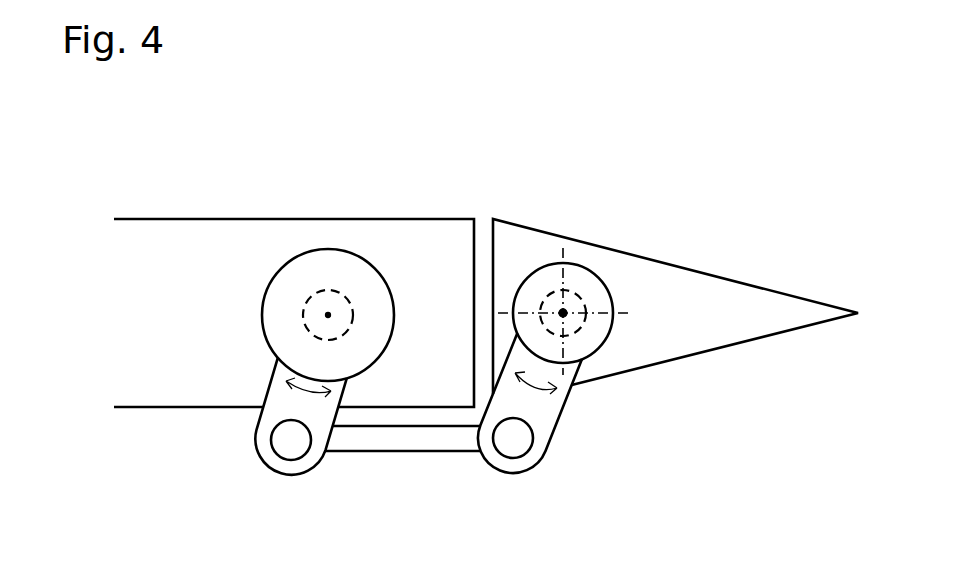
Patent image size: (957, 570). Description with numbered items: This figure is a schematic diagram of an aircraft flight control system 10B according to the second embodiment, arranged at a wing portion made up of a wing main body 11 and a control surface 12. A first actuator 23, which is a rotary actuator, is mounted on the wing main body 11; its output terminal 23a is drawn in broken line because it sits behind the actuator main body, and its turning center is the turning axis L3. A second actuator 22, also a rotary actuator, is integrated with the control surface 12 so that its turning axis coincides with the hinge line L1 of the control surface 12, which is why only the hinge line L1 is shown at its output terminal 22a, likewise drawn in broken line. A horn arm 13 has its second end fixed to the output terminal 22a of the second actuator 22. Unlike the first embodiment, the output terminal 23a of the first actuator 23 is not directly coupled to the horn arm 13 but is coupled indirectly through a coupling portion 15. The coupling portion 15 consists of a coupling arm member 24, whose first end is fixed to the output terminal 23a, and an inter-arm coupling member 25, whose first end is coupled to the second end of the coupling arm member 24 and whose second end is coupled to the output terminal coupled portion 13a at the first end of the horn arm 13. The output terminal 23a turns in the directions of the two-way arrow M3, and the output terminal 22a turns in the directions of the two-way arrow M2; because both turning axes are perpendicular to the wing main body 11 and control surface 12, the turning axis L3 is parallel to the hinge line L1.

The wing main body 11 is at (152, 224).
The first actuator 23 is at (348, 258).
The output terminal of the first actuator 23a is at (302, 316).
The turning axis L3 is at (328, 312).
The control surface 12 is at (653, 260).
The second actuator 22 is at (585, 268).
The output terminal of the second actuator 22a is at (547, 295).
The hinge line L1 is at (563, 313).
The aircraft flight control system 10B is at (455, 171).
The coupling arm member 24 is at (258, 437).
The two-way arrow M3 is at (308, 399).
The horn arm 13 is at (540, 457).
The two-way arrow M2 is at (534, 395).
The inter-arm coupling member 25 is at (345, 450).
The output terminal coupled portion 13a is at (472, 448).
The coupling portion 15 is at (322, 499).